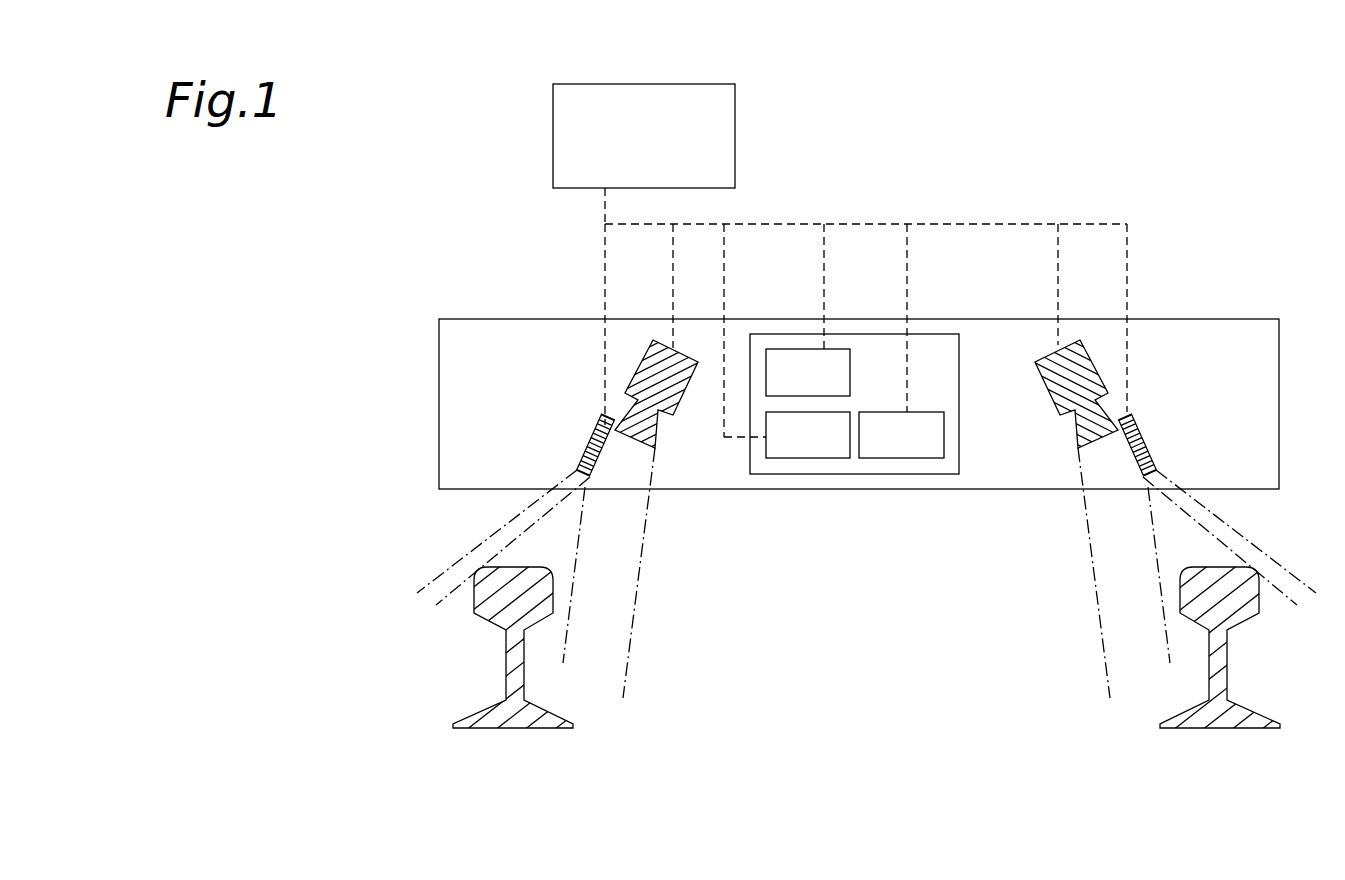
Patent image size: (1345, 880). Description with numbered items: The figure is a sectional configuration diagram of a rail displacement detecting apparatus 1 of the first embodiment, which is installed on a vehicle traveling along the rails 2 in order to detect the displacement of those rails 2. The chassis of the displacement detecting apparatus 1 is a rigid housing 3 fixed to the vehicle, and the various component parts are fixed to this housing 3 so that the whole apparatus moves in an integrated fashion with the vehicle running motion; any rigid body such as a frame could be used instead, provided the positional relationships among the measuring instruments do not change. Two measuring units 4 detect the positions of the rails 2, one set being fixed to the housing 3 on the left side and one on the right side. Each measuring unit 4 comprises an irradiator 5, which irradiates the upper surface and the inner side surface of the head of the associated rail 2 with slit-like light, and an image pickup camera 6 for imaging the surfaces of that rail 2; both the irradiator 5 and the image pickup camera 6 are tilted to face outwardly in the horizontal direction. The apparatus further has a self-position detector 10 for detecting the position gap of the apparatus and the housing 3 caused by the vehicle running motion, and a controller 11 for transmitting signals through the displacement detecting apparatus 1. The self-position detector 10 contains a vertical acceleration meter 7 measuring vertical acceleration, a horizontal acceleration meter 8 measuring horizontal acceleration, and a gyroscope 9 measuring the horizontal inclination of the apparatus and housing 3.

The displacement detecting apparatus 1 is at (940, 172).
The rails 2 is at (565, 718).
The housing 3 is at (482, 333).
The measuring unit 4 is at (658, 283).
The irradiator 5 is at (603, 413).
The image pickup camera 6 is at (666, 340).
The vertical acceleration meter 7 is at (797, 358).
The horizontal acceleration meter 8 is at (886, 449).
The gyroscope 9 is at (803, 449).
The self-position detector 10 is at (932, 333).
The controller 11 is at (574, 122).